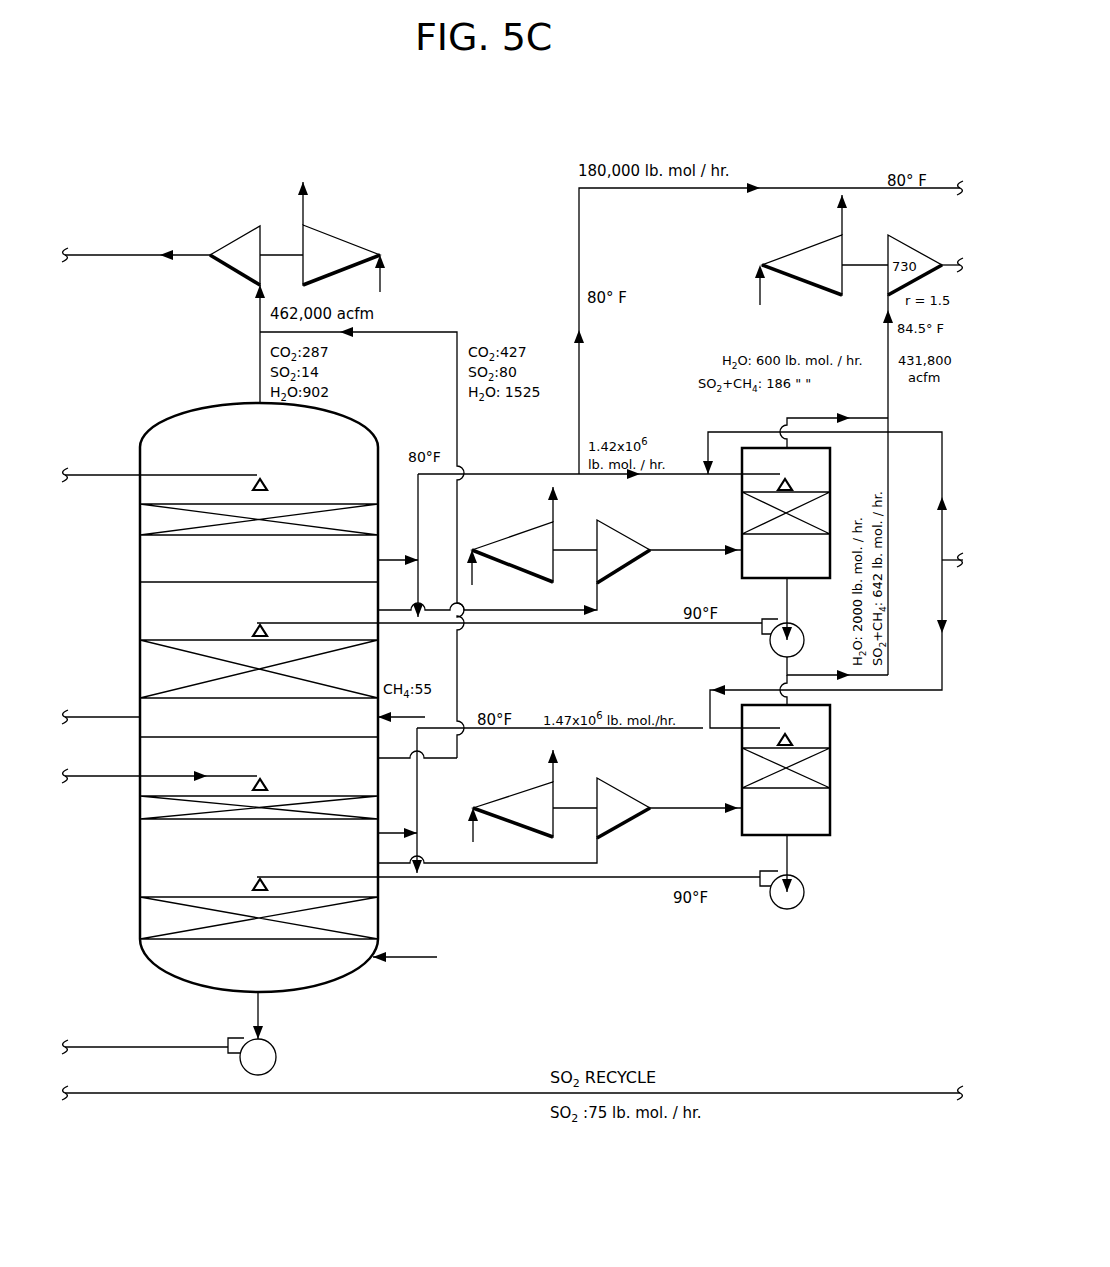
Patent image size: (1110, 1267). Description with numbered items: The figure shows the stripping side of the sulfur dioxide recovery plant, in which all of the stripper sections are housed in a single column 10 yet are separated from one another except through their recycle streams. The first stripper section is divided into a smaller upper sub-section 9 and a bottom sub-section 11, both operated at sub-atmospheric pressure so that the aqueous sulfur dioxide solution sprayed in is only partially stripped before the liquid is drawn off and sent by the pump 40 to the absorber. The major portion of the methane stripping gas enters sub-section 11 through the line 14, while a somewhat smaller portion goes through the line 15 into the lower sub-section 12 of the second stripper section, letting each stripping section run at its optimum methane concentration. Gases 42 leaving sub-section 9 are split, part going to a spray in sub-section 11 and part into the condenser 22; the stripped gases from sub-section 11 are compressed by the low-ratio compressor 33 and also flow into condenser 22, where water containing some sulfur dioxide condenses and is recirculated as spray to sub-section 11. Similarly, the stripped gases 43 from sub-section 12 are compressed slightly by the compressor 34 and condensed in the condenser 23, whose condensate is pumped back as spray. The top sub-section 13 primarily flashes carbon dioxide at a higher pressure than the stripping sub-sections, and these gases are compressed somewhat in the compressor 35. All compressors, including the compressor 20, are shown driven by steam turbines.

The column 10 is at (206, 405).
The second sub-section of the first stripper section 9 is at (378, 822).
The first sub-section of the first stripper section 11 is at (378, 920).
The lower sub-section of the second stripper section 12 is at (378, 668).
The upper sub-section of the second stripper section 13 is at (378, 520).
The line 14 is at (403, 960).
The line 15 is at (404, 722).
The compressor 20 is at (332, 240).
The condenser 22 is at (742, 773).
The condenser 23 is at (742, 512).
The compressor 33 is at (626, 828).
The compressor 34 is at (626, 570).
The compressor 35 is at (237, 273).
The pump 40 is at (236, 1066).
The gases 42 is at (440, 760).
The stripped gases 43 is at (440, 606).